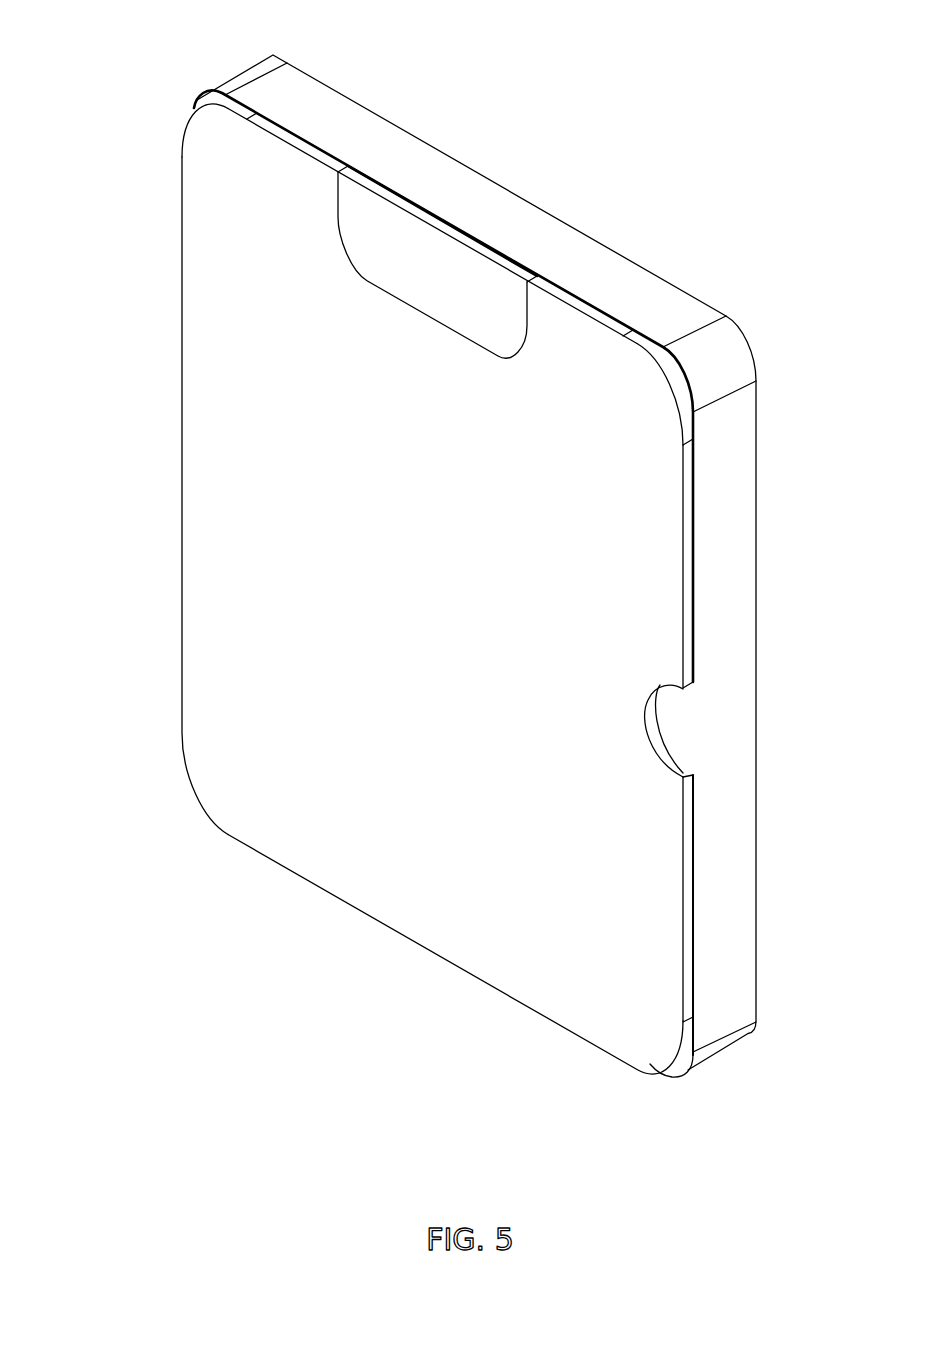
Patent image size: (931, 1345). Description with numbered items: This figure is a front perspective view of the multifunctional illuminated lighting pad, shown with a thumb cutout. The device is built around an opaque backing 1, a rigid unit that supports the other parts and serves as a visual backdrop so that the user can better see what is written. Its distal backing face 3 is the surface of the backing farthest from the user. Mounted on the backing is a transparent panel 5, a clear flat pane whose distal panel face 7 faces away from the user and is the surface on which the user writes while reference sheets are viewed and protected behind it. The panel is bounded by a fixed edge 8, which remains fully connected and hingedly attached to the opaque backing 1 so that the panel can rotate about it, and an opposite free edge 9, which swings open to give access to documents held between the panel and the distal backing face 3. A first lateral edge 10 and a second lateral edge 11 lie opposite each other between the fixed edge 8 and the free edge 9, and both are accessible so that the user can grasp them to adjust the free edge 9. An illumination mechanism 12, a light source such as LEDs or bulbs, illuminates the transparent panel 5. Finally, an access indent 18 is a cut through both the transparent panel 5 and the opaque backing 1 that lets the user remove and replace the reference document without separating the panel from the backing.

The opaque backing 1 is at (435, 539).
The distal backing face 3 is at (193, 100).
The transparent panel 5 is at (122, 448).
The distal panel face 7 is at (437, 589).
The fixed edge 8 is at (312, 200).
The free edge 9 is at (468, 897).
The first lateral edge 10 is at (213, 677).
The second lateral edge 11 is at (648, 637).
The illumination mechanism 12 is at (424, 238).
The access indent 18 is at (659, 740).